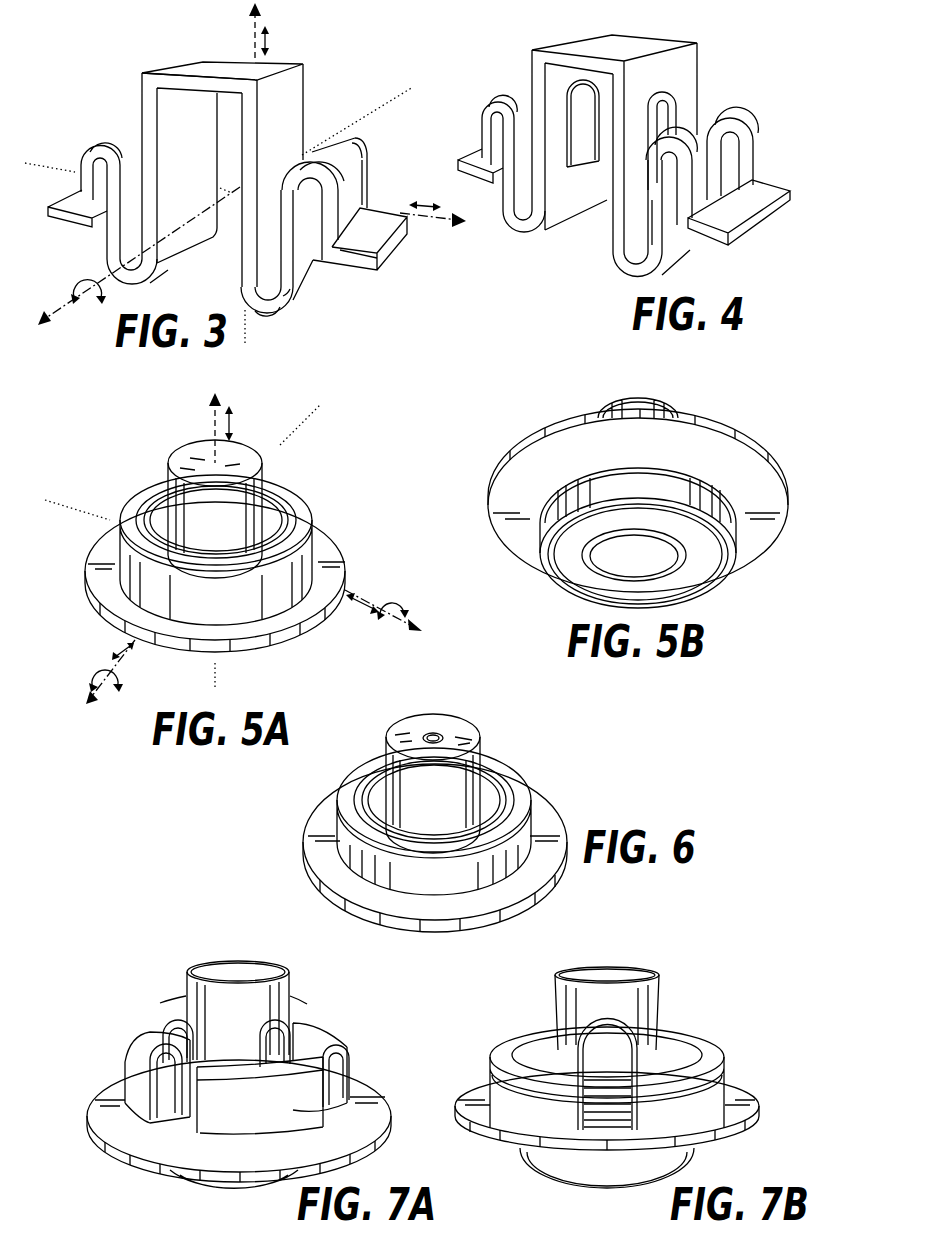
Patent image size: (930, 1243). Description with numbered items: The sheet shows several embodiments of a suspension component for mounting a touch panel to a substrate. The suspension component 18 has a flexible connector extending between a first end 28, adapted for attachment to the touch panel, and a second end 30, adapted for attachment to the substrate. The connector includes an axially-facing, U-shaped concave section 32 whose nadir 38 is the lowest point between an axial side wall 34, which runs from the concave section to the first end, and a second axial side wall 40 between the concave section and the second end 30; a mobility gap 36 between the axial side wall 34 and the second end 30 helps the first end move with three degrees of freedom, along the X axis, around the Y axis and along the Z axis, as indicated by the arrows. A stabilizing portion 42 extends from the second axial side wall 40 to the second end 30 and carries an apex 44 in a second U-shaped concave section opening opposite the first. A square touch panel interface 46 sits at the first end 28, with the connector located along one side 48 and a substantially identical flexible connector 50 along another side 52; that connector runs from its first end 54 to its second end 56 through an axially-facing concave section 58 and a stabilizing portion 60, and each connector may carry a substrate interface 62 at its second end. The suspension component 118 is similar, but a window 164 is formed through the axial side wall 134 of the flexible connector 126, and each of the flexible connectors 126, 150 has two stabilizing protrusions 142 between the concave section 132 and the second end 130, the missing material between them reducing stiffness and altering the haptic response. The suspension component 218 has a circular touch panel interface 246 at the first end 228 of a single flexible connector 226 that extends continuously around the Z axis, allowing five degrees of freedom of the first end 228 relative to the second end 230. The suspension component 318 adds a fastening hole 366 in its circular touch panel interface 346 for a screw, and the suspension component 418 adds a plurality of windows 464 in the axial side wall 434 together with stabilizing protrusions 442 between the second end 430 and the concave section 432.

In FIG. 3, the suspension component 18 is at (110, 32).
In FIG. 3, the first end 28 is at (296, 66).
In FIG. 3, the second end 30 is at (372, 210).
In FIG. 3, the concave section 32 is at (297, 306).
In FIG. 3, the axial side wall 34 is at (240, 268).
In FIG. 3, the mobility gap 36 is at (318, 145).
In FIG. 3, the nadir 38 is at (267, 312).
In FIG. 3, the second axial side wall 40 is at (290, 195).
In FIG. 3, the stabilizing portion 42 is at (372, 157).
In FIG. 3, the apex 44 is at (358, 145).
In FIG. 3, the touch panel interface 46 is at (228, 70).
In FIG. 3, the side 48 is at (280, 65).
In FIG. 3, the flexible connector 50 is at (130, 116).
In FIG. 3, the side 52 is at (178, 62).
In FIG. 3, the first end 54 is at (145, 87).
In FIG. 3, the second end 56 is at (85, 220).
In FIG. 3, the concave section 58 is at (152, 280).
In FIG. 3, the stabilizing portion 60 is at (95, 138).
In FIG. 3, the substrate interface 62 is at (372, 246).
In FIG. 4, the suspension component 118 is at (642, 24).
In FIG. 4, the flexible connector 126 is at (696, 56).
In FIG. 4, the second end 130 is at (684, 222).
In FIG. 4, the concave section 132 is at (610, 270).
In FIG. 4, the axial side wall 134 is at (631, 187).
In FIG. 4, the stabilizing protrusions 142 is at (735, 122).
In FIG. 4, the flexible connector 150 is at (523, 66).
In FIG. 4, the window 164 is at (665, 110).
In FIG. 5A, the suspension component 218 is at (353, 505).
In FIG. 5B, the suspension component 218 is at (691, 384).
In FIG. 5A, the flexible connector 226 is at (304, 482).
In FIG. 5B, the flexible connector 226 is at (700, 570).
In FIG. 5A, the first end 228 is at (220, 498).
In FIG. 5A, the second end 230 is at (185, 620).
In FIG. 5A, the circular touch panel interface 246 is at (185, 455).
In FIG. 6, the suspension component 318 is at (543, 741).
In FIG. 6, the circular touch panel interface 346 is at (465, 722).
In FIG. 6, the fastening hole 366 is at (428, 733).
In FIG. 7A, the suspension component 418 is at (140, 952).
In FIG. 7B, the suspension component 418 is at (698, 994).
In FIG. 7A, the second end 430 is at (320, 1128).
In FIG. 7A, the concave section 432 is at (250, 1192).
In FIG. 7A, the axial side wall 434 is at (215, 1000).
In FIG. 7A, the stabilizing protrusions 442 is at (180, 1030).
In FIG. 7A, the windows 464 is at (195, 1043).
In FIG. 7B, the windows 464 is at (613, 1030).